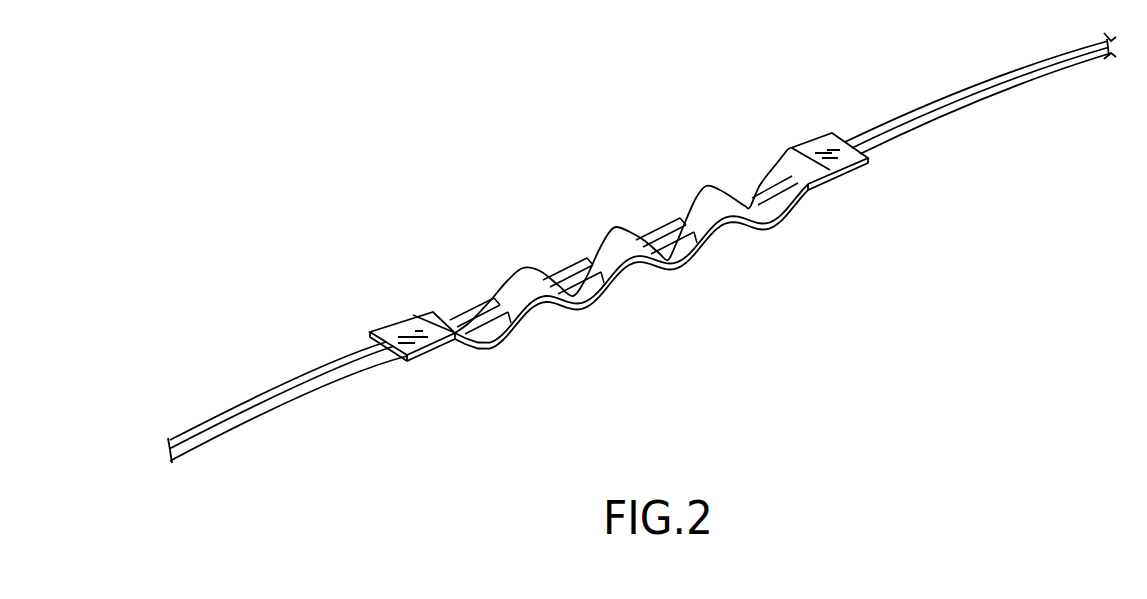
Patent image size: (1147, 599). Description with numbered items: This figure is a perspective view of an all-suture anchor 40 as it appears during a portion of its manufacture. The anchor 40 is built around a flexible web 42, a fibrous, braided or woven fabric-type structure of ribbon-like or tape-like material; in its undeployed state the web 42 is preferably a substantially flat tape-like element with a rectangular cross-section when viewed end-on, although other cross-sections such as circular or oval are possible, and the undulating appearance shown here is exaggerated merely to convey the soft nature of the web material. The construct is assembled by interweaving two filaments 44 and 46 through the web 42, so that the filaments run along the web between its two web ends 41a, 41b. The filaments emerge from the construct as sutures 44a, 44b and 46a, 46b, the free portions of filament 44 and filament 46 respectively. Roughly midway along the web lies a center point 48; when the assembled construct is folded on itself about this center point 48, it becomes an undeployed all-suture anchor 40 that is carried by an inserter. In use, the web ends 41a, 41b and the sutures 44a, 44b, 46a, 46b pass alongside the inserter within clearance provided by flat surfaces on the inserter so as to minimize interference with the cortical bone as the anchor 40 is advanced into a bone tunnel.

The all-suture anchor 40 is at (586, 158).
The web end 41a is at (392, 330).
The web end 41b is at (848, 157).
The flexible web 42 is at (503, 344).
The filament 44 is at (250, 430).
The suture 44a is at (185, 464).
The suture 44b is at (1092, 63).
The filament 46 is at (245, 403).
The suture 46a is at (173, 440).
The suture 46b is at (1068, 52).
The center point 48 is at (645, 264).